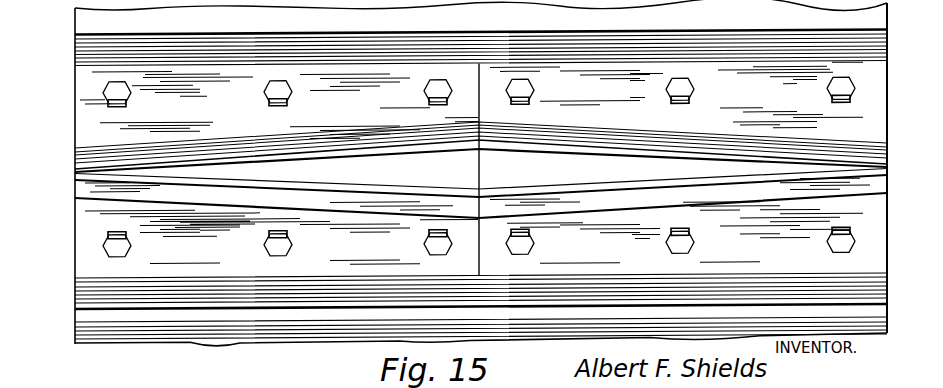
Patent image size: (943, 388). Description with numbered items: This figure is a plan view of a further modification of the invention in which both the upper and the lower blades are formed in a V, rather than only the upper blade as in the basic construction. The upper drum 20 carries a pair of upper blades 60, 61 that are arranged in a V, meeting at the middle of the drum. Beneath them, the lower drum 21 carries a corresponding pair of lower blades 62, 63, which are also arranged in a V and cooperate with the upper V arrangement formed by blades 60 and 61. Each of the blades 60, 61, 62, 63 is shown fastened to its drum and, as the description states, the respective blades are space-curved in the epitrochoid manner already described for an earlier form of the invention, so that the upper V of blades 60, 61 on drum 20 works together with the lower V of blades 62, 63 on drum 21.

The upper drum 20 is at (85, 17).
The lower drum 21 is at (78, 335).
The upper blade 60 is at (85, 110).
The upper blade 61 is at (870, 132).
The lower blade 62 is at (82, 231).
The lower blade 63 is at (873, 223).